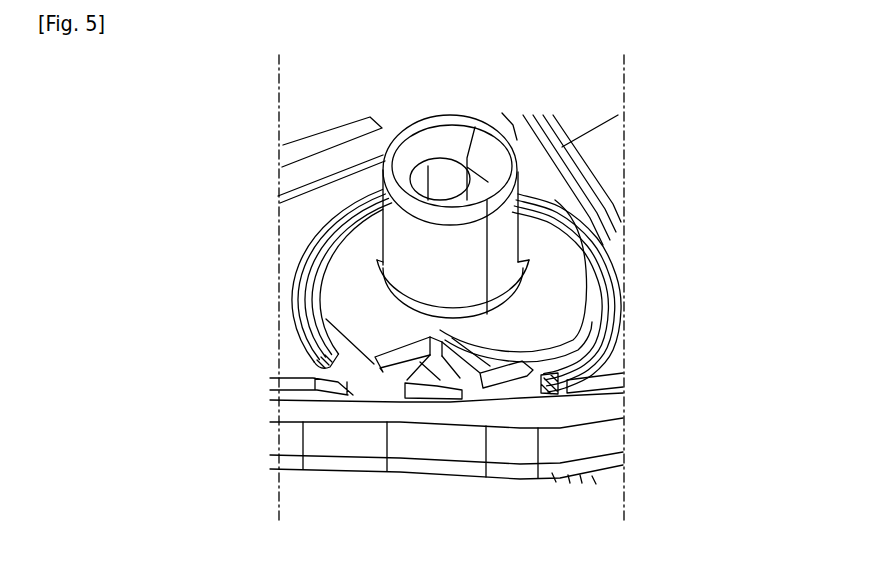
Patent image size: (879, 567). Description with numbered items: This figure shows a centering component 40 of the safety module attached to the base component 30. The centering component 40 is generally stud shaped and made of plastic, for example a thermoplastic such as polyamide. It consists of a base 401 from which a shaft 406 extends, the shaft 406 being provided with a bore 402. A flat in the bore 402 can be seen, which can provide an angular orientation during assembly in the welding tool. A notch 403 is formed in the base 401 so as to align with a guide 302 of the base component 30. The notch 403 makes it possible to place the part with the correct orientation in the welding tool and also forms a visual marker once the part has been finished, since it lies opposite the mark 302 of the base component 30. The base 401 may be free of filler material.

The centering component 40 is at (238, 235).
The base 401 is at (363, 322).
The bore 402 is at (443, 185).
The notch 403 is at (395, 357).
The shaft 406 is at (512, 255).
The base component 30 is at (588, 440).
The guide 302 is at (438, 383).